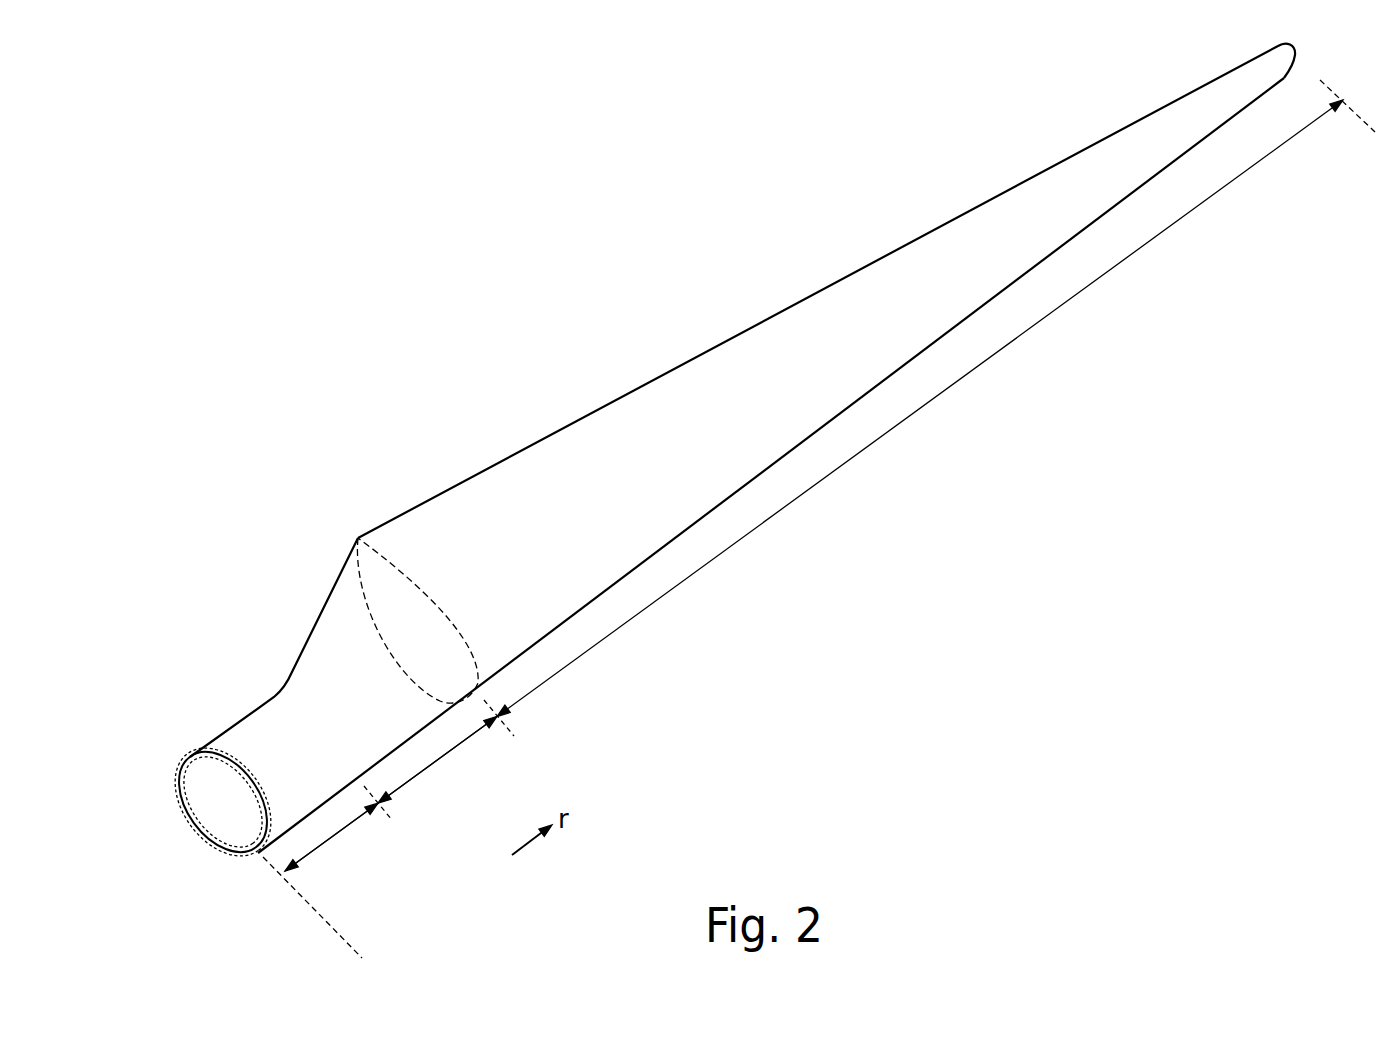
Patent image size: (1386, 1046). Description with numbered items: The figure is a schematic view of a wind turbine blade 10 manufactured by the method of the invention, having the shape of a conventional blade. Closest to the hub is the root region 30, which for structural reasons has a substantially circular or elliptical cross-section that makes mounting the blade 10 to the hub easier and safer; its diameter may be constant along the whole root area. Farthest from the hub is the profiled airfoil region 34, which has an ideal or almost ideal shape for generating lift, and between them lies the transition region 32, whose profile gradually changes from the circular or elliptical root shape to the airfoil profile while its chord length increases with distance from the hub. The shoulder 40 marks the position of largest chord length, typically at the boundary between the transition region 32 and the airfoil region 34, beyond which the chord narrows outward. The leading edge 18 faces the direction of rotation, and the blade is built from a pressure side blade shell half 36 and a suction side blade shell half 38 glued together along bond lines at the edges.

The wind turbine blade 10 is at (591, 371).
The leading edge 18 is at (1070, 242).
The root region 30 is at (327, 840).
The transition region 32 is at (456, 747).
The airfoil region 34 is at (993, 352).
The pressure side blade shell half 36 is at (203, 752).
The suction side blade shell half 38 is at (186, 766).
The shoulder 40 is at (358, 538).